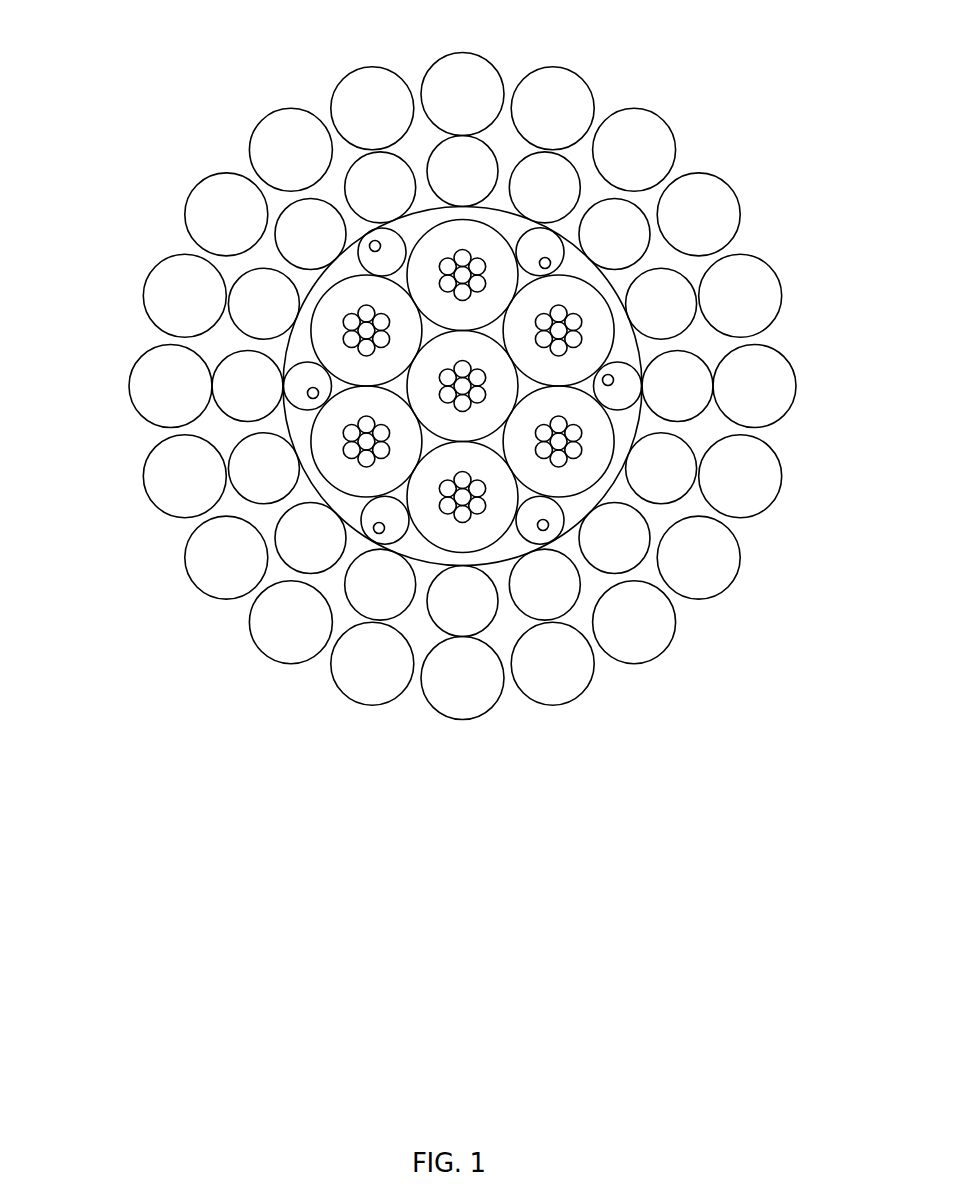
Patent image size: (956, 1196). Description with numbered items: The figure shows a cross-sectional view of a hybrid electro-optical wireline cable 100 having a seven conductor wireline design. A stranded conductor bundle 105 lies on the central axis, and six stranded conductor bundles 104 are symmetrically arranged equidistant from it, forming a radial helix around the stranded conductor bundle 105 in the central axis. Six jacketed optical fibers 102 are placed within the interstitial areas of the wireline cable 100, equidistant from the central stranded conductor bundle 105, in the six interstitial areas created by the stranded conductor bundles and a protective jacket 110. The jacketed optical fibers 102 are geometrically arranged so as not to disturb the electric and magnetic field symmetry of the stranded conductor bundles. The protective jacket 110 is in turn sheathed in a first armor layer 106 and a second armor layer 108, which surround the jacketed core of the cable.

The wireline cable 100 is at (160, 185).
The jacketed optical fiber 102 is at (370, 520).
The stranded conductor bundle 104 is at (593, 327).
The stranded conductor bundle in the central axis 105 is at (495, 398).
The first armor layer 106 is at (240, 390).
The second armor layer 108 is at (173, 297).
The protective jacket 110 is at (425, 210).